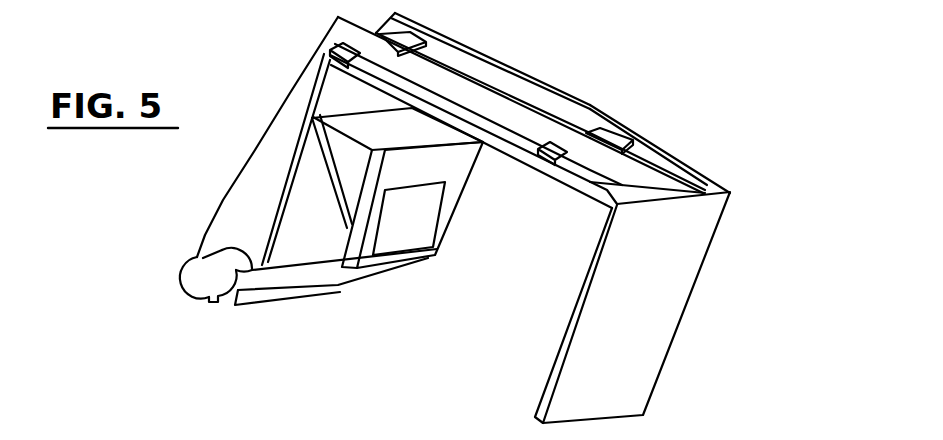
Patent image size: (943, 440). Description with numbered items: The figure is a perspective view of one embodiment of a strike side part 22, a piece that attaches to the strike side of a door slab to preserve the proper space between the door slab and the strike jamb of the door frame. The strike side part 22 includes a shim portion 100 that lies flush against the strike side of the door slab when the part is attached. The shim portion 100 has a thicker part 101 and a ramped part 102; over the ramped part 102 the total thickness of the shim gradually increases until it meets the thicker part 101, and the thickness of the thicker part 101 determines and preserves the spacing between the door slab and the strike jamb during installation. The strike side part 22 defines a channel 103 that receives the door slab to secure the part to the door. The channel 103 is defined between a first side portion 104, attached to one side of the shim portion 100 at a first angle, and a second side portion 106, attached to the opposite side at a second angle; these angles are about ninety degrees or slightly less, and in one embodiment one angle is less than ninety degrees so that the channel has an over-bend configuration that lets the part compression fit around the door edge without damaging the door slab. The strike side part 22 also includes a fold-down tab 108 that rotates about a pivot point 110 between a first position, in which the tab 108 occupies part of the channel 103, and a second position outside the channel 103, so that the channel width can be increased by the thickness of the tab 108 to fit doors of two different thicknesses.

The strike side part 22 is at (605, 57).
The shim portion 100 is at (707, 185).
The thicker part 101 is at (522, 72).
The ramped part 102 is at (667, 148).
The channel 103 is at (456, 315).
The first side portion 104 is at (672, 312).
The second side portion 106 is at (236, 178).
The fold-down tab 108 is at (297, 278).
The pivot point 110 is at (213, 273).